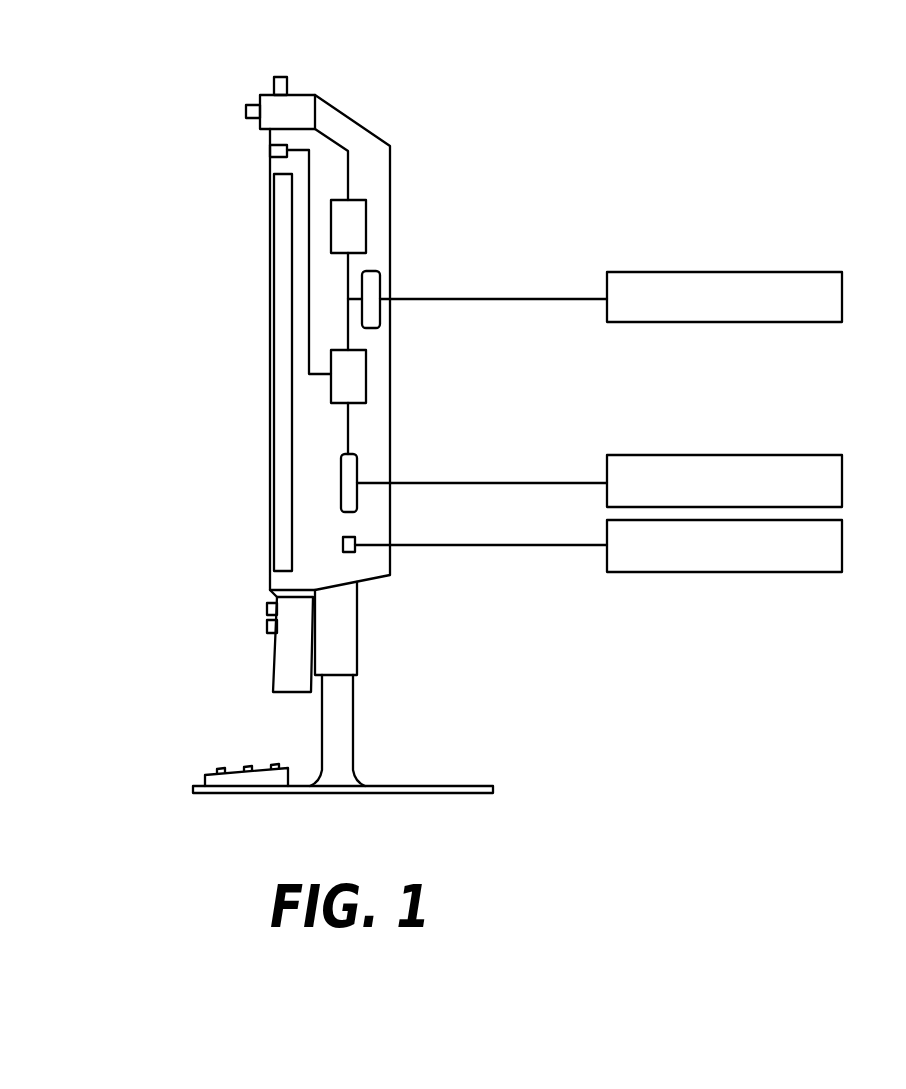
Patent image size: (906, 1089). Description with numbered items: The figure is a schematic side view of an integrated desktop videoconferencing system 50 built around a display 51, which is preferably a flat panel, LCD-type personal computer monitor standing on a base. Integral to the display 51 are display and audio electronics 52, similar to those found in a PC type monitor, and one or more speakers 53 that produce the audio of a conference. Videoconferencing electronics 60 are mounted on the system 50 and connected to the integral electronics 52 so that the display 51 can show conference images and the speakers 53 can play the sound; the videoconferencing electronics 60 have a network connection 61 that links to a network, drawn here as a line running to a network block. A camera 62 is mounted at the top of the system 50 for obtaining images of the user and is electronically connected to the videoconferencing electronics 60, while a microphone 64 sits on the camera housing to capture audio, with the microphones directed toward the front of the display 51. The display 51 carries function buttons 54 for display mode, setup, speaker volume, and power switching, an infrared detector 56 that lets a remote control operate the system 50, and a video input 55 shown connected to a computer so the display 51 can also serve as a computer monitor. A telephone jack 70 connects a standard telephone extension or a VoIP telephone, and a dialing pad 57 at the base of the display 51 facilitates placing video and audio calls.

The integrated desktop videoconferencing system 50 is at (68, 94).
The display 51 is at (270, 497).
The display and audio electronics 52 is at (366, 363).
The speaker 53 is at (277, 672).
The function buttons 54 is at (267, 608).
The video input 55 is at (357, 465).
The infrared detector 56 is at (270, 150).
The dialing pad 57 is at (206, 775).
The videoconferencing electronics 60 is at (366, 212).
The network connection 61 is at (380, 283).
The camera 62 is at (315, 95).
The microphone 64 is at (278, 77).
The telephone jack 70 is at (355, 552).